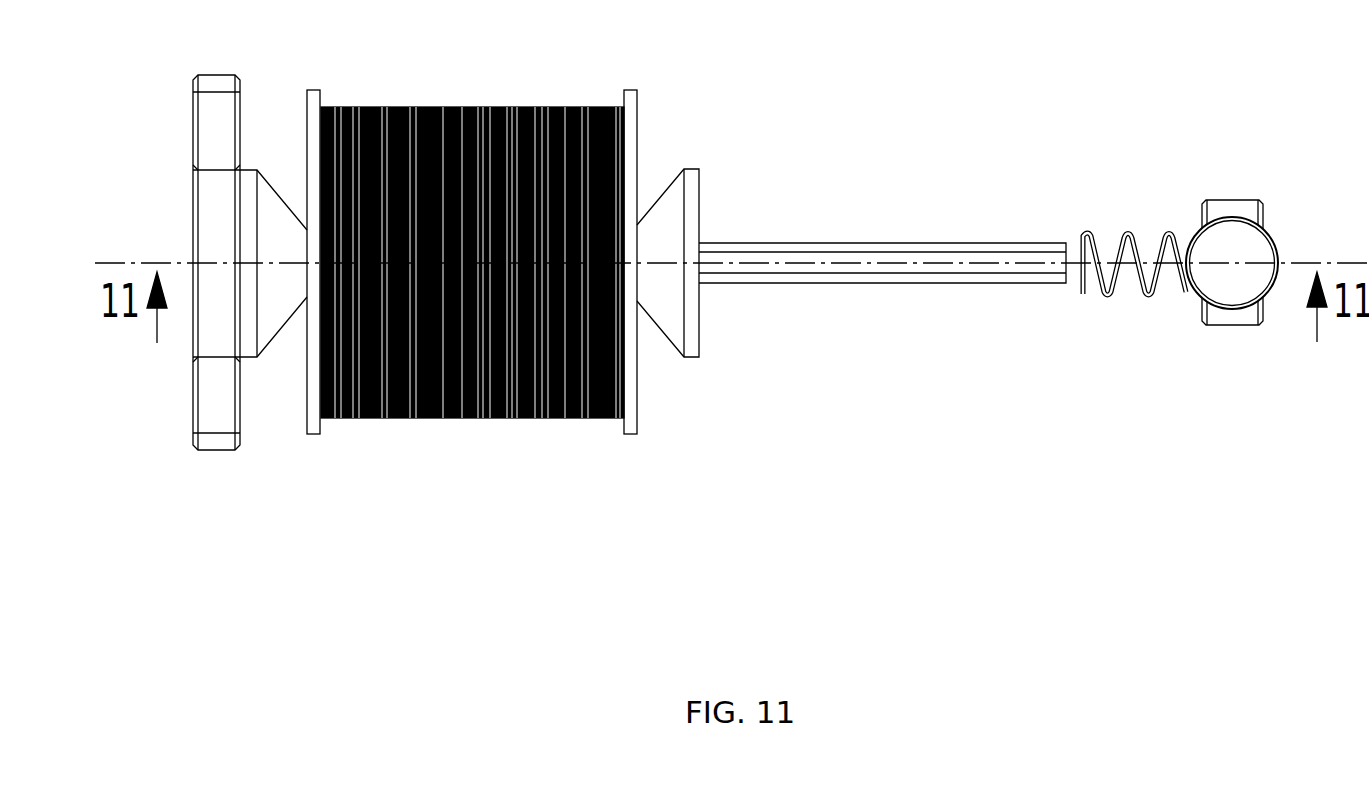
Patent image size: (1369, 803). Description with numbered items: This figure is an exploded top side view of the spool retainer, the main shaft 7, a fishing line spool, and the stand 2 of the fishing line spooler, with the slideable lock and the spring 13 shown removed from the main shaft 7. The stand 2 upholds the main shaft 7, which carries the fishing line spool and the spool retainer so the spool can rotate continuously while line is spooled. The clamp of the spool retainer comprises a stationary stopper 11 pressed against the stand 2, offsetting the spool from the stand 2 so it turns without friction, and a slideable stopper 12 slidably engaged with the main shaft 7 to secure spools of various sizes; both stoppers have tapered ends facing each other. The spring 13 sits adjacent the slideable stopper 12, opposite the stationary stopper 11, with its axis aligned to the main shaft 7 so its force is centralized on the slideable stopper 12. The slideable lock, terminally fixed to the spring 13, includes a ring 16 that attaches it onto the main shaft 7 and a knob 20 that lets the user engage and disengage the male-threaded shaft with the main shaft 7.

The stand 2 is at (220, 80).
The stationary stopper 11 is at (275, 195).
The slideable stopper 12 is at (698, 187).
The main shaft 7 is at (912, 250).
The spring 13 is at (1163, 237).
The ring 16 is at (1262, 210).
The knob 20 is at (1277, 252).